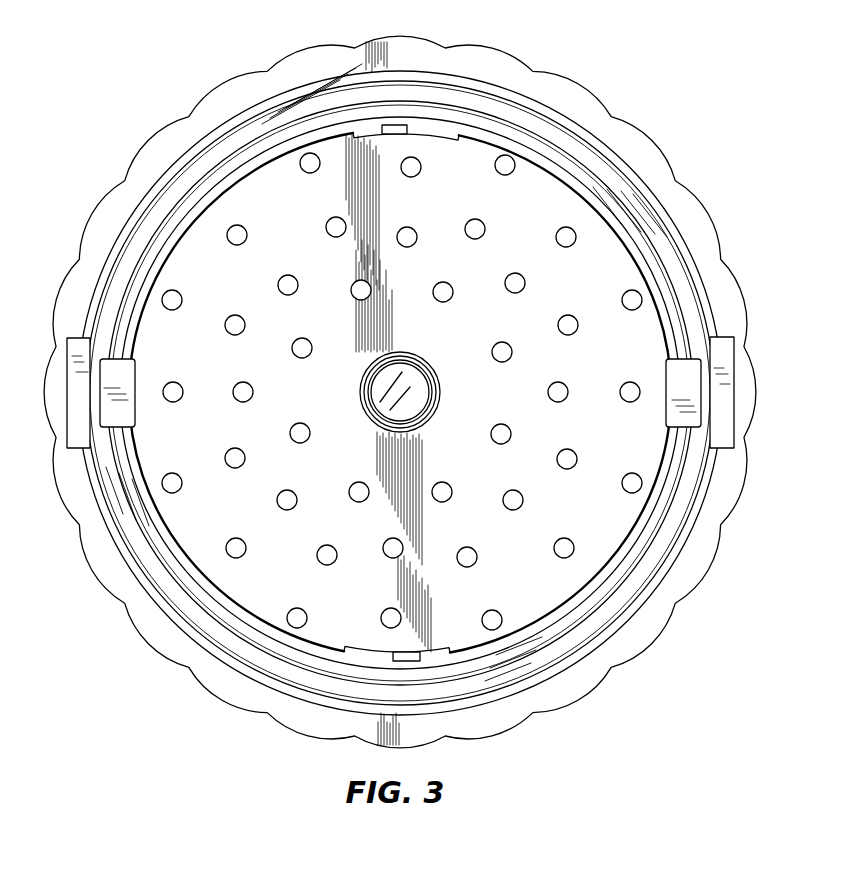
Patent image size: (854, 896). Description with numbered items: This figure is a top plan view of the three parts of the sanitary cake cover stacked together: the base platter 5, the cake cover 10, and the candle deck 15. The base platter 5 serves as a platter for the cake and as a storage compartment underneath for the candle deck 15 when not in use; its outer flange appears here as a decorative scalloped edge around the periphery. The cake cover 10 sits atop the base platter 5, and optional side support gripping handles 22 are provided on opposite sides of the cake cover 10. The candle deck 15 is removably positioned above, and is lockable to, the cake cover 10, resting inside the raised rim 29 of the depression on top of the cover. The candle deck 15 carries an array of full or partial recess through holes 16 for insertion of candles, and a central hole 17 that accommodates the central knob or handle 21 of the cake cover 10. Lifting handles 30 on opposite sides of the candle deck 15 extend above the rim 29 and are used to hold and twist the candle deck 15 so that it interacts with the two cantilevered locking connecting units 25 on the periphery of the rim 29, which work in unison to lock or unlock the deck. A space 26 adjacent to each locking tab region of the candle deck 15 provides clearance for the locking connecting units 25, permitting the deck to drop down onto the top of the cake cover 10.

The base platter 5 is at (219, 107).
The cake cover 10 is at (128, 225).
The candle deck 15 is at (326, 349).
The through holes 16 is at (508, 158).
The central hole 17 is at (437, 387).
The central knob or handle 21 is at (410, 383).
The side support gripping handles 22 is at (722, 343).
The locking connecting units 25 is at (398, 125).
The space 26 is at (455, 130).
The raised rim 29 is at (253, 140).
The lifting handles 30 is at (688, 378).